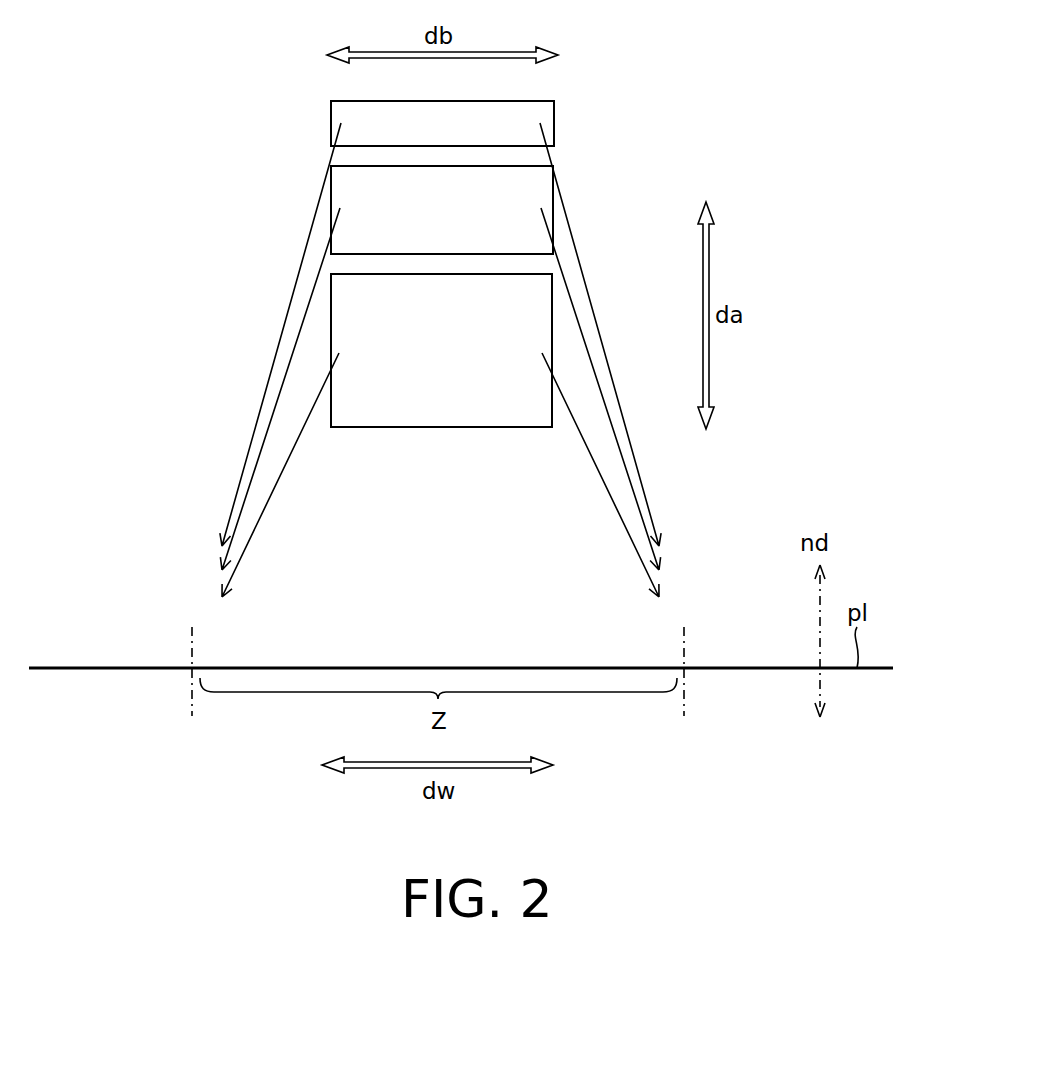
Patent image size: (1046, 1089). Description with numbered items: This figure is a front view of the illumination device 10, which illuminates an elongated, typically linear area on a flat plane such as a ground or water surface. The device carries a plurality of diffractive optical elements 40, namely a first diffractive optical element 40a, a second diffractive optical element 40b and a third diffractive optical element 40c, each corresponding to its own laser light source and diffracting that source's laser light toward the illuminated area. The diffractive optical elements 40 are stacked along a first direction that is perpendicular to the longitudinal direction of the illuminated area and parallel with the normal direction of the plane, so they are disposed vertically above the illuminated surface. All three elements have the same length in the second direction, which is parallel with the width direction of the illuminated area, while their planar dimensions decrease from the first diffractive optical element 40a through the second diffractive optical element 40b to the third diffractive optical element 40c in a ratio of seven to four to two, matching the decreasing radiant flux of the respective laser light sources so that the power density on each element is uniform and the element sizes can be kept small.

The illumination device 10 is at (417, 343).
The diffractive optical elements 40 is at (508, 287).
The first diffractive optical element 40a is at (440, 405).
The second diffractive optical element 40b is at (540, 187).
The third diffractive optical element 40c is at (555, 122).